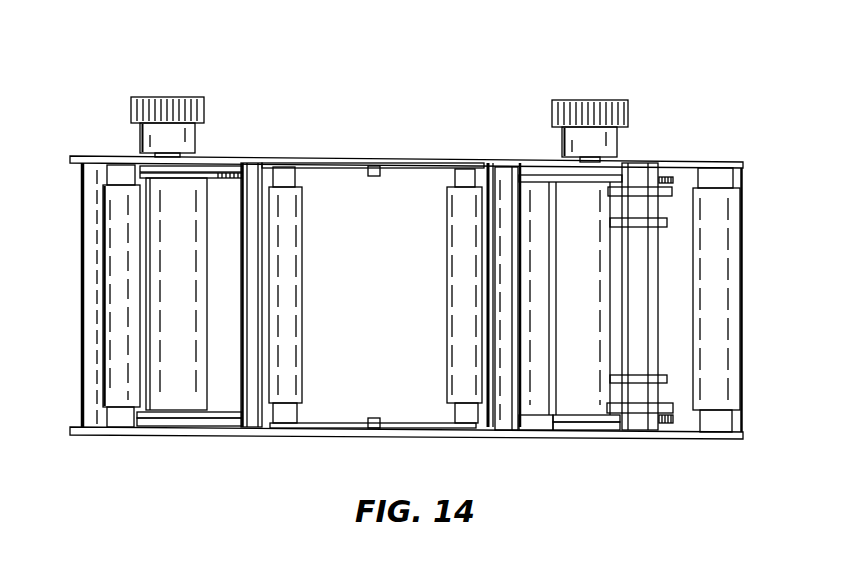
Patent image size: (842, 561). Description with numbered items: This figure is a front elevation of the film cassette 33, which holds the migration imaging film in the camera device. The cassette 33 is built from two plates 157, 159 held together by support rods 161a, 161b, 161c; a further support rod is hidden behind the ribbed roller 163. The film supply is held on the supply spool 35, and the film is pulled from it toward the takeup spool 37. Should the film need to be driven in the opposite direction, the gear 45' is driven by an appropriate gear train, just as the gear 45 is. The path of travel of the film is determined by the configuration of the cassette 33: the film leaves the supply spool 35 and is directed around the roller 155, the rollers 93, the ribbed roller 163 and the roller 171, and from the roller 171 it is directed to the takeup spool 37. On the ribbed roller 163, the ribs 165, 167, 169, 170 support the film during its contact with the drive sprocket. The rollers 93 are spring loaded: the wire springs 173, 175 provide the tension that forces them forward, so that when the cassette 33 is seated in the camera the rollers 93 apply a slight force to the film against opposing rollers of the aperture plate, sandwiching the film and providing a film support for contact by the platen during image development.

The film cassette 33 is at (230, 95).
The supply spool 35 is at (187, 252).
The takeup spool 37 is at (565, 247).
The gear 45 is at (608, 116).
The gear 45' is at (134, 121).
The rollers 93 is at (290, 255).
The roller 155 is at (117, 355).
The plate 157 is at (690, 161).
The plate 159 is at (665, 439).
The support rod 161a is at (85, 243).
The support rod 161b is at (250, 377).
The support rod 161c is at (503, 275).
The ribbed roller 163 is at (641, 180).
The rib 165 is at (670, 192).
The rib 167 is at (665, 225).
The rib 169 is at (665, 378).
The rib 170 is at (670, 407).
The roller 171 is at (725, 300).
The wire spring 173 is at (385, 170).
The wire spring 175 is at (415, 425).